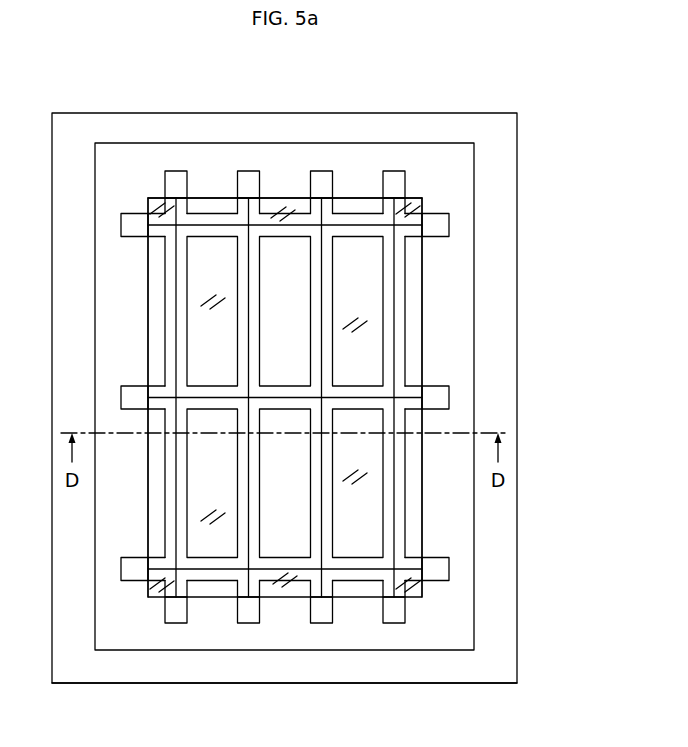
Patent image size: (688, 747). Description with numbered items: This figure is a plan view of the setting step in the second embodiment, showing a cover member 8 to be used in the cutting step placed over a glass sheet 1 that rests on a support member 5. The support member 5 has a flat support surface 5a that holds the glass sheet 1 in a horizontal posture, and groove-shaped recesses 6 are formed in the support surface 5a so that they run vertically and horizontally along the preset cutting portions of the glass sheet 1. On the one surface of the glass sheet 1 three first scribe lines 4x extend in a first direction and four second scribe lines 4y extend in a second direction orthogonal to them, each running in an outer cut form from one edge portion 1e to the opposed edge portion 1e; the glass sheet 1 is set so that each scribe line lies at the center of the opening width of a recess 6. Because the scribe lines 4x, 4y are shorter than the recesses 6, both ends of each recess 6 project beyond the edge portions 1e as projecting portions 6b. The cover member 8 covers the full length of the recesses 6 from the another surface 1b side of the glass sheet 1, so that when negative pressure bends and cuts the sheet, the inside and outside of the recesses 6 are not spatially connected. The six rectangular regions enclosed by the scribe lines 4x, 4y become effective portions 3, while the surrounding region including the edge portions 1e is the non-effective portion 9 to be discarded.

The glass sheet 1 is at (353, 186).
The another surface 1b is at (157, 340).
The edge portion 1e is at (210, 197).
The effective portion 3 is at (205, 272).
The first scribe line 4x is at (362, 233).
The second scribe line 4y is at (170, 270).
The support member 5 is at (548, 196).
The support surface 5a is at (500, 620).
The recess 6 is at (403, 518).
The projecting portion 6b is at (177, 181).
The cover member 8 is at (275, 134).
The non-effective portion 9 is at (413, 335).